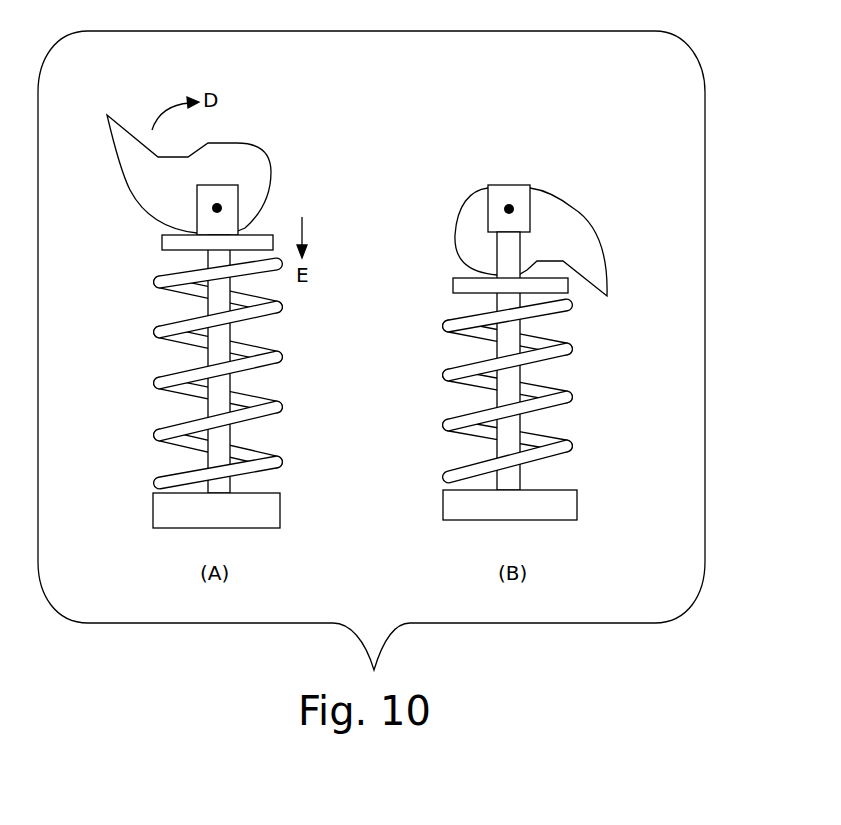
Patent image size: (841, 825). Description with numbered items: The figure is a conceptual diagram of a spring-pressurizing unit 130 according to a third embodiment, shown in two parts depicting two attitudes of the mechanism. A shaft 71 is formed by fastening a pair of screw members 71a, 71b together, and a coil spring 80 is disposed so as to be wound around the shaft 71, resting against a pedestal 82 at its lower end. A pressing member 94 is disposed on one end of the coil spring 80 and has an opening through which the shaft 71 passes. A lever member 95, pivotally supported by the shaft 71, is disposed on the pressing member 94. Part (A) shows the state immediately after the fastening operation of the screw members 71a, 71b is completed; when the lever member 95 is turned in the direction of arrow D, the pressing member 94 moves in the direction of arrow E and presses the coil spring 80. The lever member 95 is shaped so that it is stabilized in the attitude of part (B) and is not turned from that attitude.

The spring-pressurizing unit 130 is at (331, 151).
The lever member 95 is at (258, 157).
The pressing member 94 is at (263, 234).
The coil spring 80 is at (401, 362).
The shaft 71 is at (215, 393).
The screw member 71a is at (265, 406).
The screw member 71b is at (270, 450).
The pedestal 82 is at (277, 512).